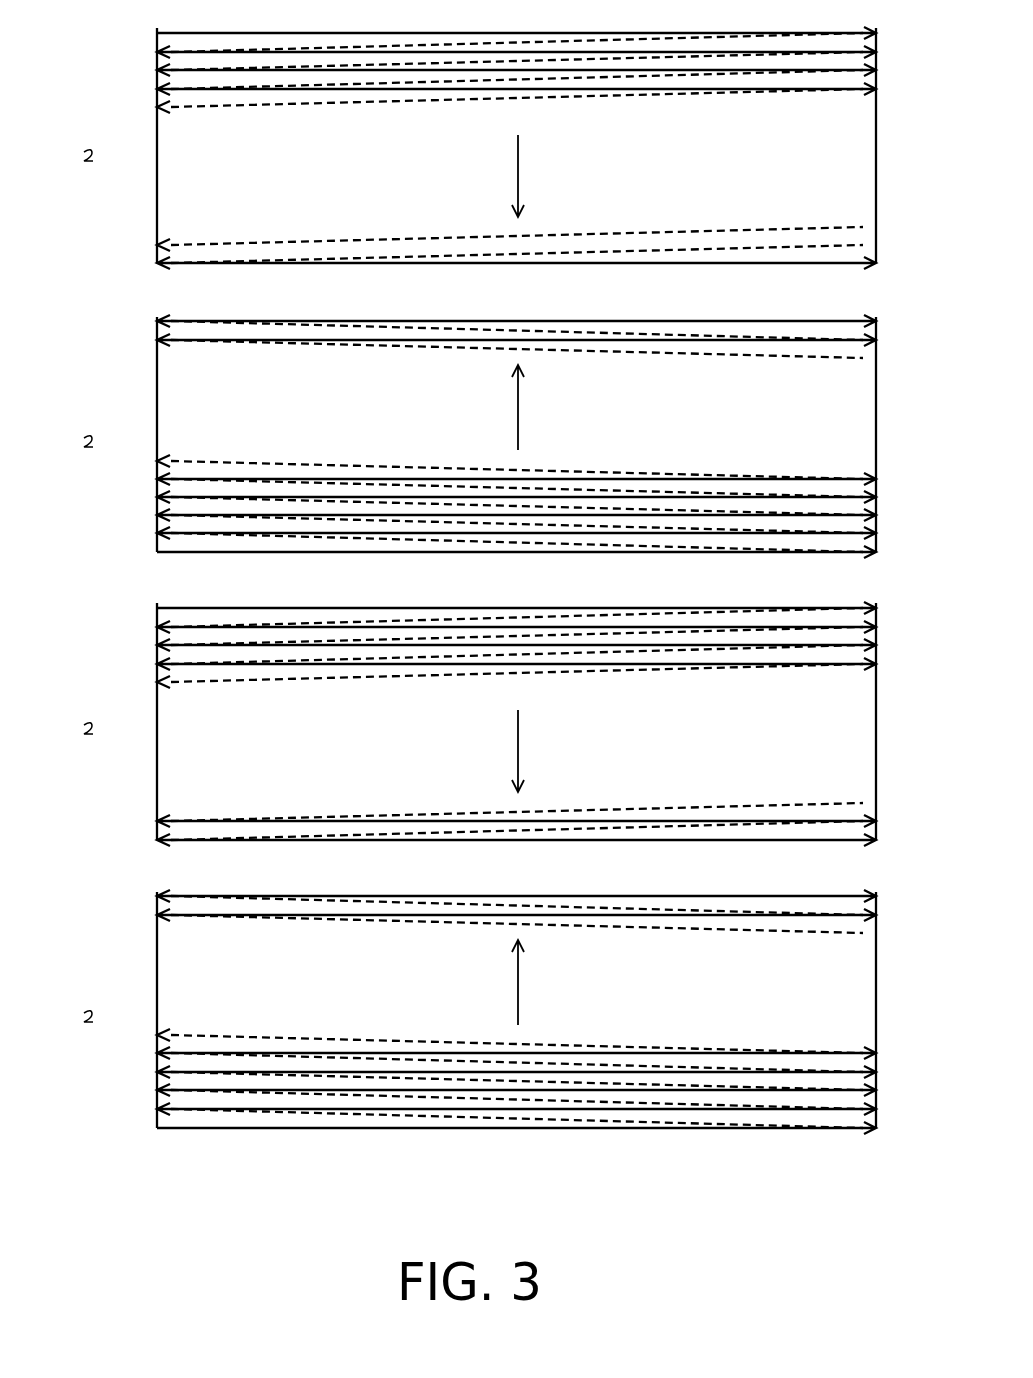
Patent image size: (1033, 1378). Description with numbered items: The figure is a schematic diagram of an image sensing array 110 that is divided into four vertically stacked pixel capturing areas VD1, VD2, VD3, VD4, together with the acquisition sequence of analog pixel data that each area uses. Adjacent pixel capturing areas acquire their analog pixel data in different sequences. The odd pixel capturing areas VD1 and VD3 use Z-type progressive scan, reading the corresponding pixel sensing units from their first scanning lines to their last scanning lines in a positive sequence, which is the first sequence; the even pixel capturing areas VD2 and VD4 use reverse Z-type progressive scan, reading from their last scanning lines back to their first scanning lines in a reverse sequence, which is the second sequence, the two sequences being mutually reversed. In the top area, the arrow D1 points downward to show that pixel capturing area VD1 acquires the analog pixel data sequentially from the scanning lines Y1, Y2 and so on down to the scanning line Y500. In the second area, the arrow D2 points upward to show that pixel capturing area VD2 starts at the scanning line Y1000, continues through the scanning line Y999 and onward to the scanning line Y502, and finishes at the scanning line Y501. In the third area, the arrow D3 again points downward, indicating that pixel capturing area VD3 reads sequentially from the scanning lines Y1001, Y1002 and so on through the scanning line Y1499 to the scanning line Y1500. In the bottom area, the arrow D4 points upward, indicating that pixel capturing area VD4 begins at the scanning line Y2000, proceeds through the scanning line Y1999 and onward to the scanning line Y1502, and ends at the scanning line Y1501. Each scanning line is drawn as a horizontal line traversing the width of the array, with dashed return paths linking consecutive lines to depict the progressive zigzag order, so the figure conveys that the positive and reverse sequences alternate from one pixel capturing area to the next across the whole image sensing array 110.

The image sensing array 110 is at (487, 620).
The pixel capturing area VD1 is at (465, 145).
The pixel capturing area VD2 is at (460, 437).
The pixel capturing area VD3 is at (460, 725).
The pixel capturing area VD4 is at (459, 1013).
The arrow D1 is at (518, 165).
The arrow D2 is at (518, 422).
The arrow D3 is at (518, 740).
The arrow D4 is at (518, 997).
The scanning line Y1 is at (145, 39).
The scanning line Y2 is at (145, 58).
The scanning line Y500 is at (145, 269).
The scanning line Y501 is at (145, 327).
The scanning line Y502 is at (145, 346).
The scanning line Y999 is at (145, 539).
The scanning line Y1000 is at (145, 558).
The scanning line Y1001 is at (145, 614).
The scanning line Y1002 is at (145, 633).
The scanning line Y1499 is at (145, 827).
The scanning line Y1500 is at (145, 846).
The scanning line Y1501 is at (145, 902).
The scanning line Y1502 is at (145, 921).
The scanning line Y1999 is at (145, 1115).
The scanning line Y2000 is at (145, 1134).